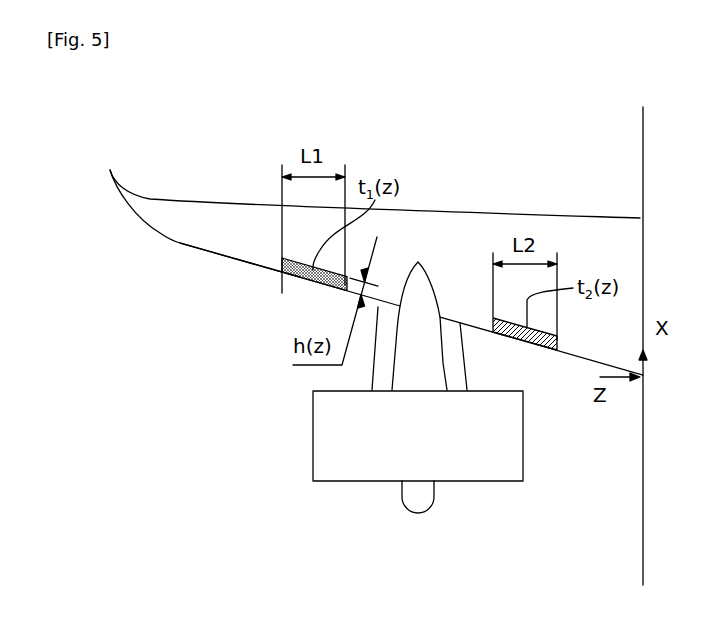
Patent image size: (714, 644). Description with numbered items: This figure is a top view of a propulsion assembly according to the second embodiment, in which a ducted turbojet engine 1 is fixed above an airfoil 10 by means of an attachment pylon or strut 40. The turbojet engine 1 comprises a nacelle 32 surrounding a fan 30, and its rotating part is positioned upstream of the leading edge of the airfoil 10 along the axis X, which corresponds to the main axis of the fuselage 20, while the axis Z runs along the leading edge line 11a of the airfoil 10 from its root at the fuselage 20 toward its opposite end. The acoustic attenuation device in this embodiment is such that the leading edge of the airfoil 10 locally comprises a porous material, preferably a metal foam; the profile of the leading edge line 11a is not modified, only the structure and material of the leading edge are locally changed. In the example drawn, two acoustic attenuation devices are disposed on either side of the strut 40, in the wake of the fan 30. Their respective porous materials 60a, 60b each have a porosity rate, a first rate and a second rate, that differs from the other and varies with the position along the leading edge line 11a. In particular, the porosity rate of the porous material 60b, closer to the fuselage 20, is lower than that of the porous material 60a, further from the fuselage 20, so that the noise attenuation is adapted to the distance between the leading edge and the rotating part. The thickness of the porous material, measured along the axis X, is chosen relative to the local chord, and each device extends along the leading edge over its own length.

The turbojet engine 1 is at (362, 550).
The airfoil 10 is at (172, 215).
The leading edge line 11a is at (195, 250).
The fuselage 20 is at (628, 543).
The fan 30 is at (483, 482).
The nacelle 32 is at (335, 432).
The attachment pylon or strut 40 is at (417, 266).
The porous material 60a is at (289, 298).
The porous material 60b is at (538, 362).